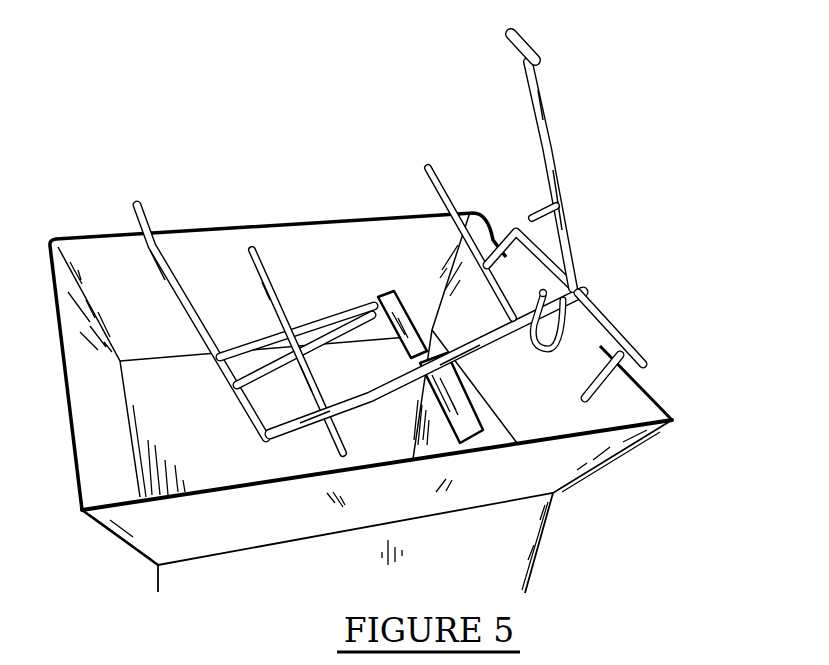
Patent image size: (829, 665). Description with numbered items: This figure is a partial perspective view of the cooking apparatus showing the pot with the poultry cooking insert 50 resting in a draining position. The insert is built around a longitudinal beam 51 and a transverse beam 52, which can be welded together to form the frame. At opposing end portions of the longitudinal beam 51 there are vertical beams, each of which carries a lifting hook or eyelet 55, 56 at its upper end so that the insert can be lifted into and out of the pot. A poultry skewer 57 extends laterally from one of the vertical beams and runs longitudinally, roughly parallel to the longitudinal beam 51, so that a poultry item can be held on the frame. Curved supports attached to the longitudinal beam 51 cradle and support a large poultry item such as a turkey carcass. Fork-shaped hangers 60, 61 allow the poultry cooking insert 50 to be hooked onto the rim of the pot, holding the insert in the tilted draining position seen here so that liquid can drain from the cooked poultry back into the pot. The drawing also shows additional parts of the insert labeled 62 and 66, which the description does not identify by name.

The poultry cooking insert 50 is at (555, 157).
The longitudinal beam 51 is at (480, 355).
The transverse beam 52 is at (390, 288).
The lifting hook or eyelet 55 is at (523, 42).
The lifting hook or eyelet 56 is at (137, 200).
The poultry skewer 57 is at (258, 340).
The hanger 60 is at (495, 240).
The hanger 61 is at (598, 396).
The pivot arm 62 is at (612, 323).
The peg 66 is at (545, 225).